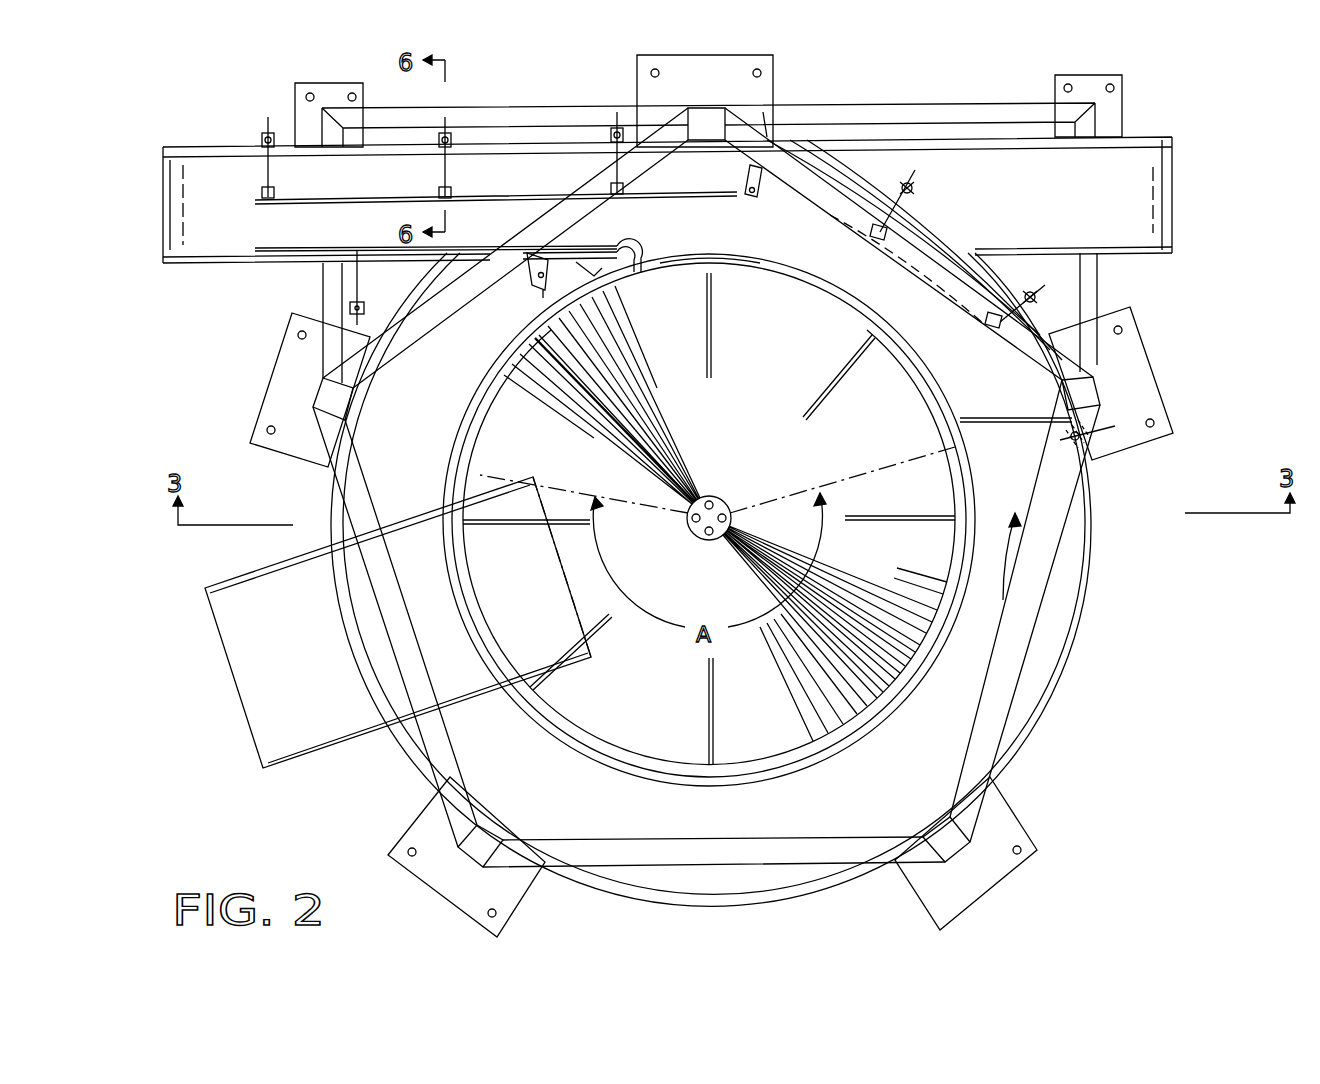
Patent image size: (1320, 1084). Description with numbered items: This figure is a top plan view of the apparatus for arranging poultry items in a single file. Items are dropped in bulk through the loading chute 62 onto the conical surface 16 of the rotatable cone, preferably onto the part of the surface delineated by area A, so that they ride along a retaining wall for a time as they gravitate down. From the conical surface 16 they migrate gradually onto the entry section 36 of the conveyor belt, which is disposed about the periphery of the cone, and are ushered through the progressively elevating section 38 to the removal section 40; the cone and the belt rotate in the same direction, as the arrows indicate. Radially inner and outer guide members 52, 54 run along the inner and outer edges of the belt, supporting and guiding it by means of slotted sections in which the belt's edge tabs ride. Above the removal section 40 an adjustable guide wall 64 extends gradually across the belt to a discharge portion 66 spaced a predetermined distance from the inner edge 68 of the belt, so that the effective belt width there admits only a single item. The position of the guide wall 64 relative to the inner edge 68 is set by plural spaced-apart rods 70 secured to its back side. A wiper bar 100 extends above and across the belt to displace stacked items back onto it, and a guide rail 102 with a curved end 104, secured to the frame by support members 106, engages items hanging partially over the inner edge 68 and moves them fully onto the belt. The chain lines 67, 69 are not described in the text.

The conical surface 16 is at (620, 708).
The entry section 36 is at (585, 272).
The progressively elevating section 38 is at (432, 755).
The removal section 40 is at (850, 232).
The radially inner guide member 52 is at (940, 640).
The radially outer guide member 54 is at (1040, 692).
The loading chute 62 is at (305, 758).
The adjustable guide wall 64 is at (820, 240).
The discharge portion 66 is at (742, 202).
The reference line 67 is at (490, 470).
The inner edge 68 is at (737, 258).
The reference axis 69 is at (876, 484).
The rods 70 is at (445, 165).
The wiper bar 100 is at (990, 422).
The guide rail 102 is at (258, 246).
The curved end 104 is at (648, 272).
The support members 106 is at (352, 296).